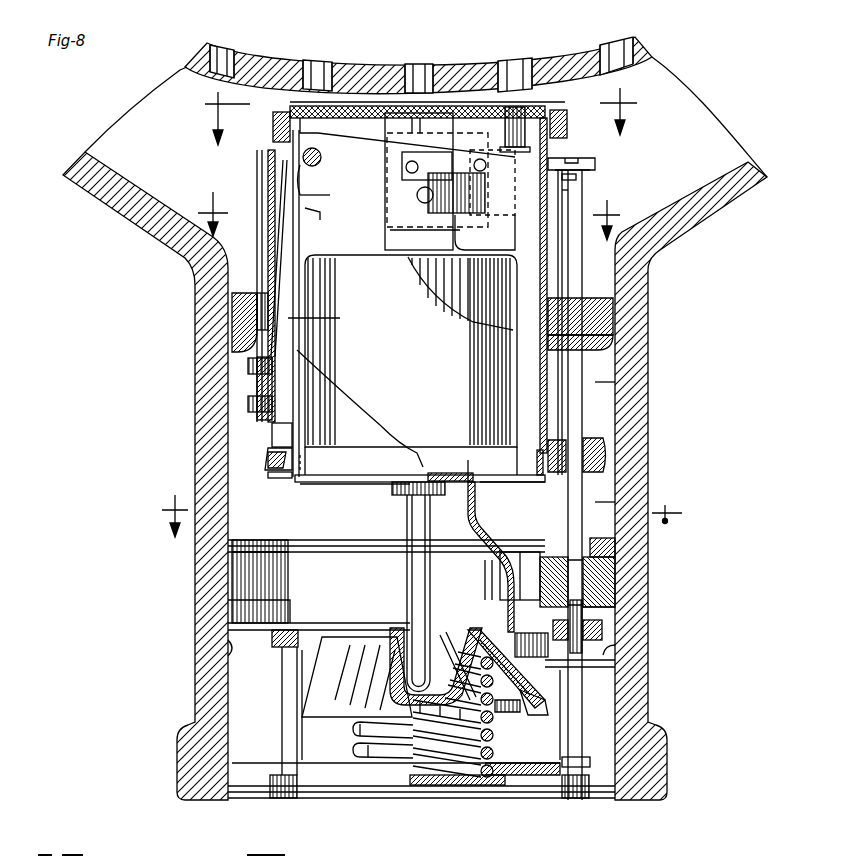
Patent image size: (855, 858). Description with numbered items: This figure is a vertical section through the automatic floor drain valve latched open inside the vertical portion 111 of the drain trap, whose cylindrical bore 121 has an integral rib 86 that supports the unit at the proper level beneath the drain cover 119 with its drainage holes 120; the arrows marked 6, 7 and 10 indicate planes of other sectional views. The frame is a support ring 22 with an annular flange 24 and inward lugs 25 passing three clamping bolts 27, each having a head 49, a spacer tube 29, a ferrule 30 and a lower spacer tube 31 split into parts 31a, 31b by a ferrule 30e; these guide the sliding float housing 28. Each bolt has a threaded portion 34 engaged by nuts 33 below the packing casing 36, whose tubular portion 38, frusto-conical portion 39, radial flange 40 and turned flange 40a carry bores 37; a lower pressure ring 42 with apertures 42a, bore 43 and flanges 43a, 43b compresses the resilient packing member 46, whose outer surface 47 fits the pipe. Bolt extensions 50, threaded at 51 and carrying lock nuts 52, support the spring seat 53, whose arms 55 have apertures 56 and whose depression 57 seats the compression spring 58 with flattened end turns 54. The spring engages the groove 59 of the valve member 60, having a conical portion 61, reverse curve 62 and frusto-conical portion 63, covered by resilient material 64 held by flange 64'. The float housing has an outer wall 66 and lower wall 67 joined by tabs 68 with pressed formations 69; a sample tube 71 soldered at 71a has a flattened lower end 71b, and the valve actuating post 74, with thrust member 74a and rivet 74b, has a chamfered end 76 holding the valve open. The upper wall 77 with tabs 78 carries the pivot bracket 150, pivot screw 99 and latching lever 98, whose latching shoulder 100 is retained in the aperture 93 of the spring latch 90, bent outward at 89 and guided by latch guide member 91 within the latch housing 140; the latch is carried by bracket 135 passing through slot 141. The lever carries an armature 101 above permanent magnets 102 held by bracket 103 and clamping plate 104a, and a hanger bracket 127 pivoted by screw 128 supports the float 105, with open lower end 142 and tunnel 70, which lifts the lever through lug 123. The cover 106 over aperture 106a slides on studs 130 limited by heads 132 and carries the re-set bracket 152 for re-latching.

The section line 6- 6 is at (416, 116).
The section line 7- 7 is at (414, 216).
The section line 10- 10 is at (424, 516).
The support ring 22 is at (232, 328).
The annular flange 24 is at (615, 300).
The inwardly extending lugs 25 is at (550, 358).
The clamping bolts 27 is at (586, 420).
The float housing 28 is at (565, 260).
The spacer tube 29 is at (584, 193).
The spacing ferrule 30 is at (598, 328).
The frusto-conical ferrule 30e is at (605, 458).
The additional spacer tube 31 is at (290, 505).
The spacer tube part 31a is at (615, 382).
The spacer tube part 31b is at (615, 503).
The threaded nuts 33 is at (283, 615).
The threaded portion 34 is at (272, 645).
The packing casing 36 is at (336, 542).
The circular bores 37 is at (622, 582).
The tubular portion 38 is at (511, 576).
The frusto-conical portion 39 is at (520, 575).
The radial flange 40 is at (555, 555).
The upwardly turned cylindrical flange 40a is at (232, 546).
The lower pressure ring 42 is at (618, 612).
The apertures 42a is at (618, 600).
The circular bore 43 is at (531, 645).
The downwardly turned annular flange 43a is at (575, 668).
The downwardly turned annular flange 43b is at (605, 640).
The resilient annular packing member 46 is at (232, 575).
The outer cylindrical surface 47 is at (232, 600).
The cylindrical heads 49 is at (588, 157).
The cylindrical extension 50 is at (300, 711).
The threaded portion 51 is at (300, 757).
The lock nuts 52 is at (270, 780).
The spring seat 53 is at (310, 792).
The flattened end turns 54 is at (470, 785).
The radially extending arms 55 is at (300, 763).
The apertures 56 is at (575, 760).
The stamped cylindrical depression 57 is at (460, 785).
The helical compression spring 58 is at (352, 733).
The V-shaped annular groove 59 is at (516, 667).
The valve member 60 is at (282, 690).
The conical central portion 61 is at (458, 635).
The reverse curve 62 is at (505, 658).
The backwardly extending frusto-conical portion 63 is at (543, 701).
The molded valve covering material 64 is at (331, 677).
The inwardly extending lower flange 64' is at (528, 718).
The cylindrical outer wall 66 is at (584, 178).
The flat lower wall 67 is at (328, 485).
The upwardly extending metal tabs 68 is at (305, 460).
The integral pressed formations 69 is at (268, 458).
The pressed tunnel 70 is at (545, 262).
The sample tube 71 is at (467, 506).
The secured upper end 71a is at (470, 460).
The flattened lower end 71b is at (507, 586).
The valve actuating post 74 is at (405, 522).
The annular thrust member 74a is at (395, 495).
The riveted-over portion 74b is at (425, 472).
The chamfered end 76 is at (395, 694).
The end wall 77 is at (335, 135).
The downwardly extending tabs 78 is at (572, 155).
The inwardly extending integral rib 86 is at (228, 648).
The outwardly bent upper end 89 is at (275, 157).
The spring latch 90 is at (280, 318).
The latch guide member 91 is at (282, 258).
The rectangular aperture 93 is at (279, 258).
The latching lever 98 is at (324, 217).
The pivot screw 99 is at (321, 158).
The latching shoulder 100 is at (302, 180).
The armature 101 is at (505, 186).
The permanent magnets 102 is at (486, 200).
The U-shaped bracket 103 is at (465, 143).
The clamping plate 104a is at (455, 230).
The float 105 is at (332, 258).
The top cover 106 is at (560, 103).
The aperture 106a is at (328, 193).
The vertical portion of the drain trap 111 is at (200, 400).
The drain cover 119 is at (652, 52).
The holes 120 is at (317, 74).
The cylindrical bore 121 is at (228, 437).
The depending lug 123 is at (495, 245).
The float hanger bracket 127 is at (385, 240).
The screw bolt 128 is at (400, 190).
The depending headed studs 130 is at (520, 120).
The heads 132 is at (567, 126).
The supporting bracket 135 is at (257, 382).
The latch housing 140 is at (268, 236).
The rectangular slot 141 is at (248, 362).
The open lower end 142 is at (480, 450).
The pivot bracket 150 is at (300, 106).
The re-set bracket 152 is at (413, 133).